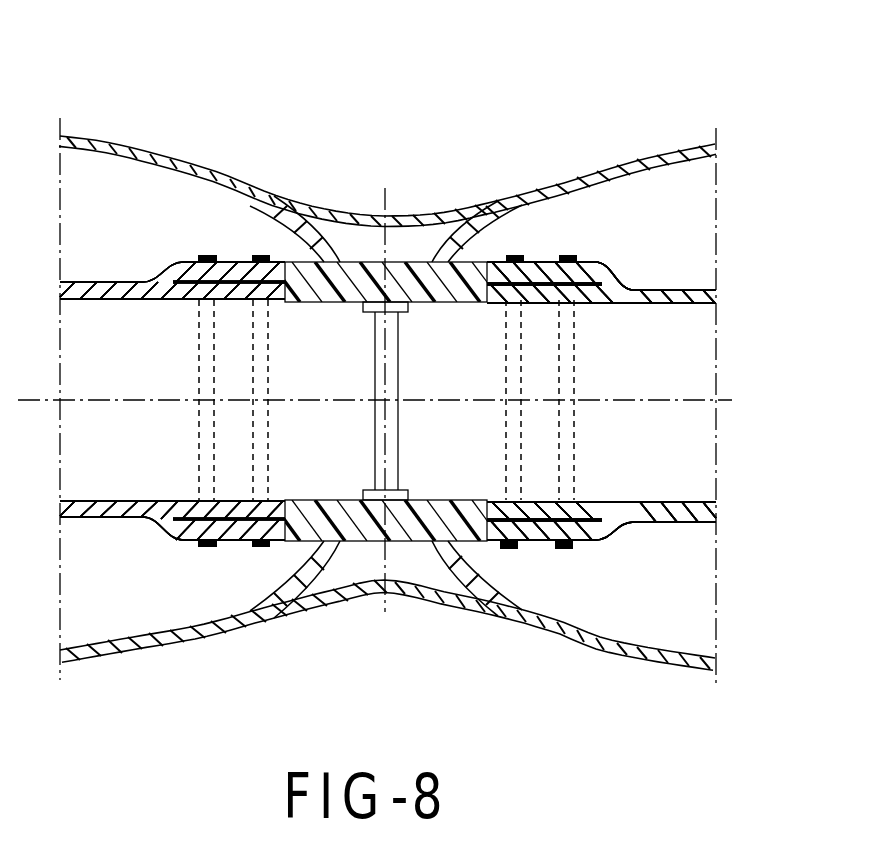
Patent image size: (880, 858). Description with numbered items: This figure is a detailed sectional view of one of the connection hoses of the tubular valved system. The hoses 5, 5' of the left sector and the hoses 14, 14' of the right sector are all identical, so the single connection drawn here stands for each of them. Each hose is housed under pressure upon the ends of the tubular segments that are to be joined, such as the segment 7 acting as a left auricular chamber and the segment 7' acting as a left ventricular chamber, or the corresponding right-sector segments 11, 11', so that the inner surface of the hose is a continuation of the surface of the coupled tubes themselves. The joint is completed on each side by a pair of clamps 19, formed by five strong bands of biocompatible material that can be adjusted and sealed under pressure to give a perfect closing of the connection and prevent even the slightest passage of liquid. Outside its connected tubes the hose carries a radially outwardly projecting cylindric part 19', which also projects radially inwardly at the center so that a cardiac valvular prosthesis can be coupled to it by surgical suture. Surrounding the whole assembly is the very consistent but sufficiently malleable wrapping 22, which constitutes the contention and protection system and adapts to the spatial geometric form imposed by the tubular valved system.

The connection hose 5 is at (640, 284).
The hose 5' is at (640, 284).
The segment of tube 7 is at (166, 284).
The tubular segment 7' is at (166, 284).
The segment 11 is at (166, 284).
The tubular segment 11' is at (166, 284).
The hose 14 is at (640, 284).
The cap 14' is at (640, 284).
The clamps 19 is at (193, 523).
The radially outwardly projecting cylindric part 19' is at (524, 508).
The malleable wrapping 22 is at (387, 364).